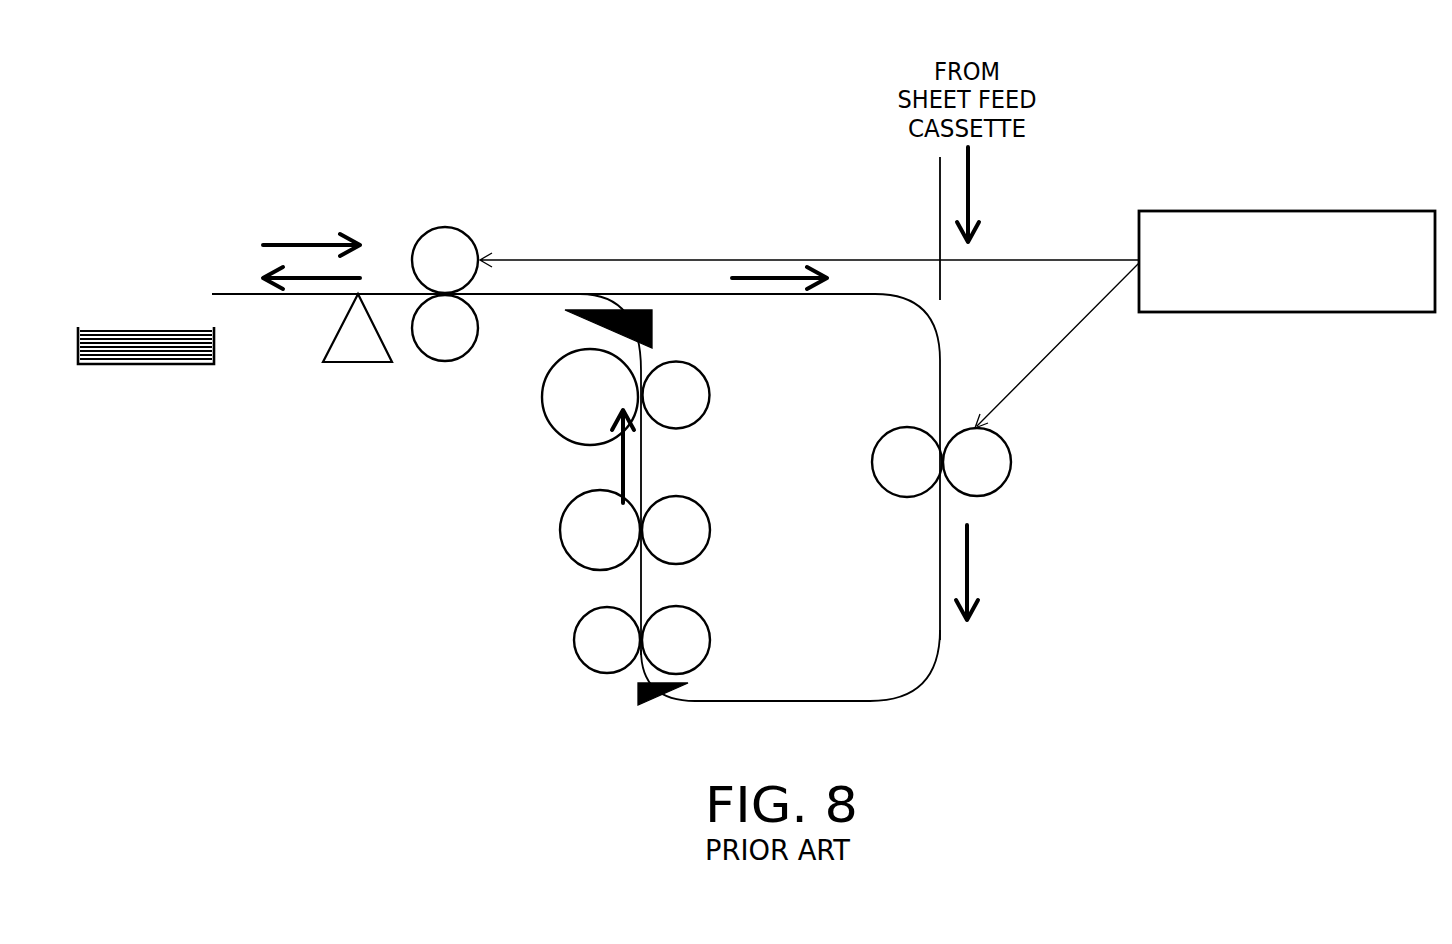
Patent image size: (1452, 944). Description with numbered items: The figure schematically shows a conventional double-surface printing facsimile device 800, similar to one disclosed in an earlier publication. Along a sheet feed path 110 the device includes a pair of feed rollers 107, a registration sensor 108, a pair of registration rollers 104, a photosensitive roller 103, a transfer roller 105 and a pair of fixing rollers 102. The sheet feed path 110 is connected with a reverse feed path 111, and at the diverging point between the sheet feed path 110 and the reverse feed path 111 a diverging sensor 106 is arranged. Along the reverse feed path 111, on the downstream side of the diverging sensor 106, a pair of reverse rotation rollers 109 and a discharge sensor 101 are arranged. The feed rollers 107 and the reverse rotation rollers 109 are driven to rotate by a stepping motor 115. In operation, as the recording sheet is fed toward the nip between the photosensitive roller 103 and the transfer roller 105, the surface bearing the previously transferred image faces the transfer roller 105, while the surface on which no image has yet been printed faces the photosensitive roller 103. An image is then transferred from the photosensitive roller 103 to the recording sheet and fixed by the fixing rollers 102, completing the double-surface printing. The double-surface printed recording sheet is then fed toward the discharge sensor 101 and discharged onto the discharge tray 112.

The sheet feeding apparatus (prior art) 800 is at (738, 104).
The discharge sensor 101 is at (365, 355).
The fixing rollers 102 is at (558, 413).
The photosensitive roller 103 is at (566, 530).
The registration rollers 104 is at (578, 642).
The transfer roller 105 is at (703, 530).
The diverging sensor 106 is at (652, 320).
The feed rollers 107 is at (1003, 460).
The registration sensor 108 is at (656, 706).
The reverse rotation rollers 109 is at (452, 345).
The sheet feed path 110 is at (866, 703).
The reverse feed path 111 is at (378, 294).
The discharge tray 112 is at (142, 365).
The stepping motor 115 is at (1286, 210).